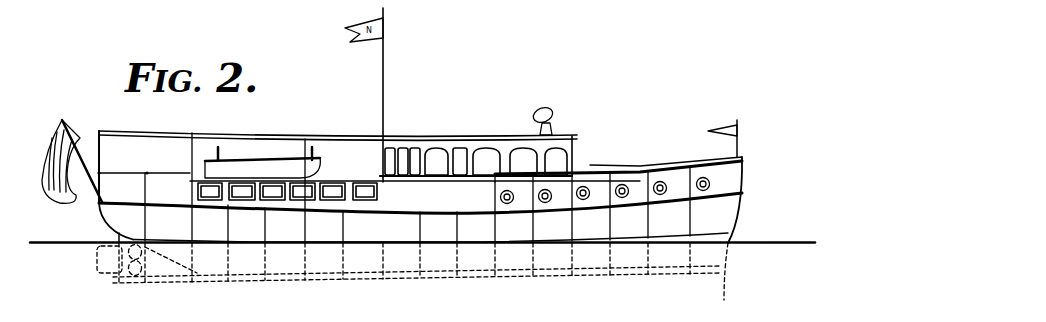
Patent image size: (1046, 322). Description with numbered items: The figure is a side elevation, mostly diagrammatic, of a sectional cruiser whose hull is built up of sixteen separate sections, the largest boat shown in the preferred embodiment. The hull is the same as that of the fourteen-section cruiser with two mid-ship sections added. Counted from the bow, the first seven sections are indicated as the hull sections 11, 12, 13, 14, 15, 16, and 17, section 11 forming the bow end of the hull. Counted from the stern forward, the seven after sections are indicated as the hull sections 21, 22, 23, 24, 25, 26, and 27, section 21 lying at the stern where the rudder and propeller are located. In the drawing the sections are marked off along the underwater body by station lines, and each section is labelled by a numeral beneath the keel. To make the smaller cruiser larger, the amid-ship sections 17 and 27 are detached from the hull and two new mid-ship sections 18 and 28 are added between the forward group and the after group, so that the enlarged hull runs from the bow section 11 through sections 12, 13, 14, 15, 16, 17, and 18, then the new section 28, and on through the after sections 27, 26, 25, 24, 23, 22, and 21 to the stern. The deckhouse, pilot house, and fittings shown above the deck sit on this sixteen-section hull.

The hull section 11 is at (712, 258).
The hull section 12 is at (674, 258).
The hull section 13 is at (636, 258).
The hull section 14 is at (596, 258).
The hull section 15 is at (557, 258).
The hull section 16 is at (519, 258).
The amid-ship section 17 is at (482, 258).
The new mid-ship section 18 is at (442, 258).
The hull section 21 is at (149, 258).
The hull section 22 is at (177, 258).
The hull section 23 is at (217, 258).
The hull section 24 is at (254, 258).
The hull section 25 is at (294, 258).
The hull section 26 is at (331, 258).
The amid-ship section 27 is at (369, 258).
The new mid-ship section 28 is at (406, 258).